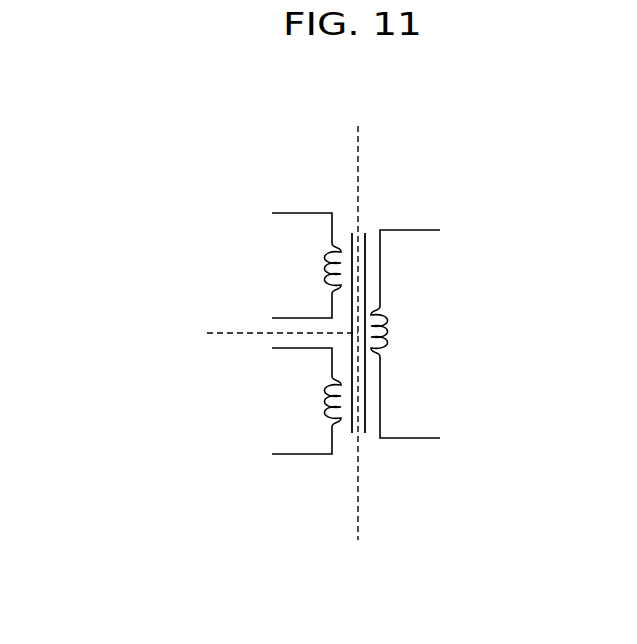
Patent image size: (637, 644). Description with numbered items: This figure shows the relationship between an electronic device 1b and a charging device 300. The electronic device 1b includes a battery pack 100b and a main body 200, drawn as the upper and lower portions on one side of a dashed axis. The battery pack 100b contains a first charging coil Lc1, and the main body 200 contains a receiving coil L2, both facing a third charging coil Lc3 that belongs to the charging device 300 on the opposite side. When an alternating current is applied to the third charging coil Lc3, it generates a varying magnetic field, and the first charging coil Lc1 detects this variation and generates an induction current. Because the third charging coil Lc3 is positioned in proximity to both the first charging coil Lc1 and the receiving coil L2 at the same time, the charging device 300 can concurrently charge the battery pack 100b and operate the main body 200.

The electronic device 1b is at (152, 323).
The battery pack 100b is at (275, 232).
The main body 200 is at (277, 435).
The charging device 300 is at (435, 196).
The first charging coil Lc1 is at (306, 265).
The receiving coil L2 is at (306, 401).
The third charging coil Lc3 is at (405, 334).